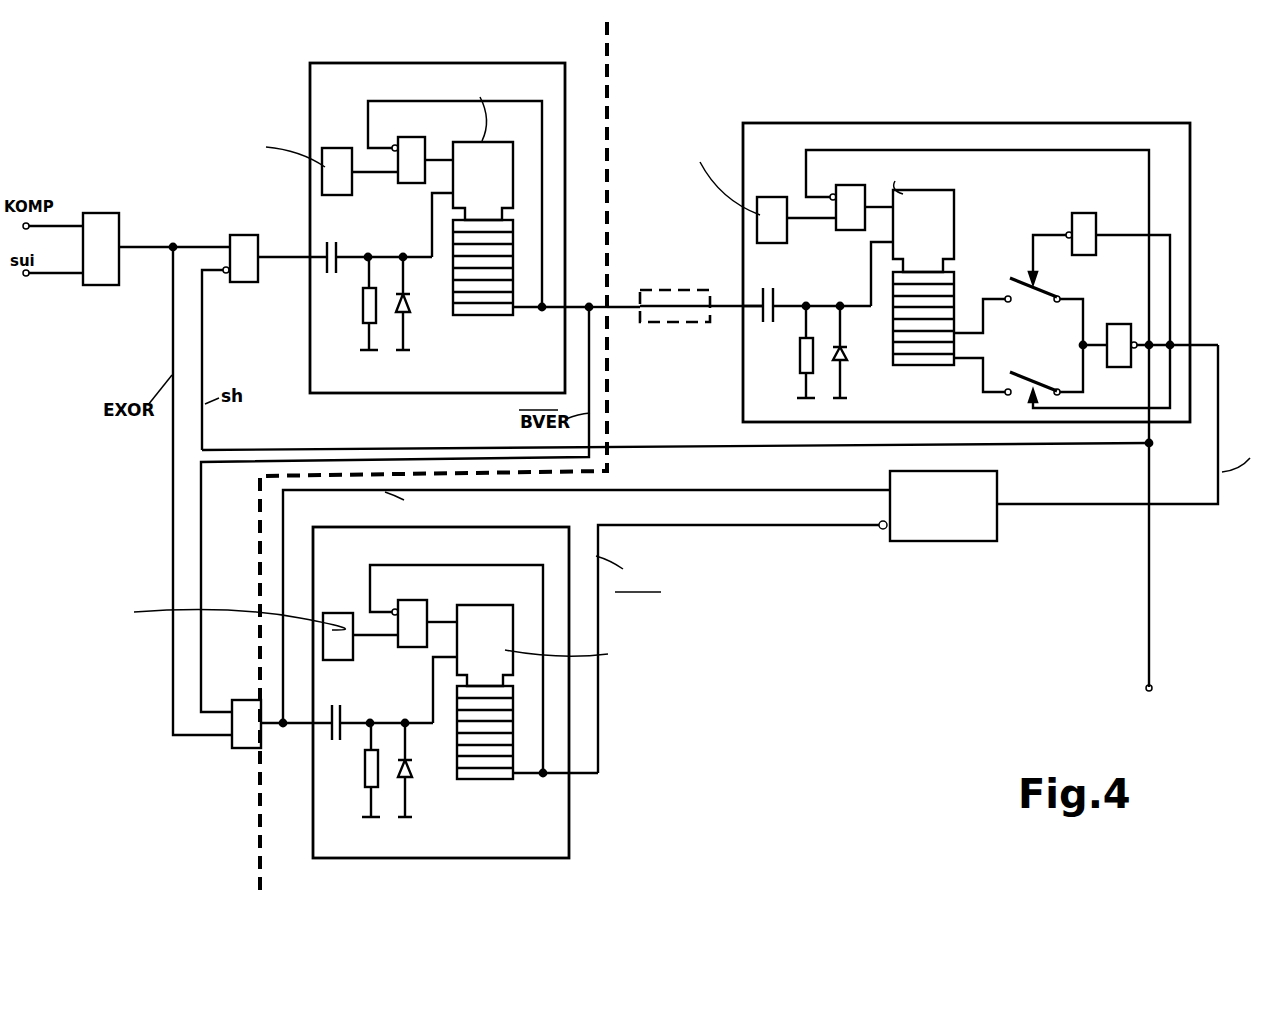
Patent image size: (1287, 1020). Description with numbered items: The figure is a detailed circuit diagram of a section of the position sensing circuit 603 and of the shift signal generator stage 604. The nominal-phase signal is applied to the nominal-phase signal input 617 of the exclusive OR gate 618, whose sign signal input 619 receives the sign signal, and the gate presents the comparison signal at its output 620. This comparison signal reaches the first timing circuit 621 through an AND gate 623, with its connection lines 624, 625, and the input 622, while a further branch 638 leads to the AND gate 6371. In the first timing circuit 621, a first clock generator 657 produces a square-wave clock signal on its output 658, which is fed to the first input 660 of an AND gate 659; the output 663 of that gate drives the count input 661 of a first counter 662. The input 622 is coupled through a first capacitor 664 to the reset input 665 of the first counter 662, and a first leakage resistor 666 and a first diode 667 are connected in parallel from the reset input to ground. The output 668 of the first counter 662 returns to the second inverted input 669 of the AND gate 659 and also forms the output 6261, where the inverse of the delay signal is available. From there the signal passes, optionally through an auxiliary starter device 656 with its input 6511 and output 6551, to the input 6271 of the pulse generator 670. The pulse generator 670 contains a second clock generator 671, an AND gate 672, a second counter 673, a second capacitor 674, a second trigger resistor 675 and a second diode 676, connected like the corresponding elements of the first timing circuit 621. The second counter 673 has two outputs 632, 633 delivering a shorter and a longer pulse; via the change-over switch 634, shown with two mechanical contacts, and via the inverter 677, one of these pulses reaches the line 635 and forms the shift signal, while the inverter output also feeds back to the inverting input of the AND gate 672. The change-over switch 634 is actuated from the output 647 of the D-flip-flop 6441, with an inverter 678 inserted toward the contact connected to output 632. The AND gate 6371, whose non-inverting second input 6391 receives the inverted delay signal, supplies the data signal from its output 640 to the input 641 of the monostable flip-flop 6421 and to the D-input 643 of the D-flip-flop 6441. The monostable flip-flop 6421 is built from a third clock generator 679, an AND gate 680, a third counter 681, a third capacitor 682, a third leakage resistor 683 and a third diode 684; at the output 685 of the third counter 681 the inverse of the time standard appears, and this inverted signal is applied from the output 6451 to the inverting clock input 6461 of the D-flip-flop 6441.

The position sensing circuit 603 is at (202, 93).
The shift signal generator stage 604 is at (956, 93).
The nominal-phase signal input 617 is at (45, 275).
The exclusive OR gate 618 is at (105, 212).
The sign signal input 619 is at (56, 222).
The output 620 is at (140, 244).
The first timing circuit 621 is at (411, 61).
The input 622 is at (285, 263).
The AND gate 623 is at (247, 233).
The AND gate input line 624 is at (198, 244).
The AND gate inverting input line 625 is at (203, 283).
The output 632 is at (980, 303).
The output 633 is at (977, 367).
The change-over switch 634 is at (1051, 345).
The line 635 is at (1010, 446).
The AND gate input line 638 is at (214, 738).
The output 640 is at (262, 742).
The input 641 is at (315, 731).
The D-input 643 is at (833, 488).
The output 647 is at (1026, 506).
The auxiliary starter device 656 is at (673, 288).
The first clock generator 657 is at (331, 150).
The output 658 is at (361, 176).
The AND gate 659 is at (403, 138).
The first input 660 is at (388, 175).
The count input 661 is at (450, 157).
The first counter 662 is at (515, 162).
The output 663 is at (436, 157).
The first capacitor 664 is at (334, 276).
The reset input 665 is at (430, 201).
The first leakage resistor 666 is at (362, 314).
The first diode 667 is at (408, 308).
The output 668 is at (530, 311).
The second inverted input 669 is at (369, 128).
The pulse generator 670 is at (1093, 121).
The second clock generator 671 is at (763, 196).
The AND gate 672 is at (850, 186).
The second counter 673 is at (957, 198).
The second capacitor 674 is at (765, 287).
The second trigger resistor 675 is at (800, 372).
The second diode 676 is at (848, 358).
The inverter 677 is at (1112, 323).
The inverter 678 is at (1100, 212).
The third clock generator 679 is at (338, 611).
The AND gate 680 is at (412, 599).
The third counter 681 is at (487, 604).
The third capacitor 682 is at (344, 714).
The third leakage resistor 683 is at (365, 781).
The third diode 684 is at (410, 776).
The output 685 is at (526, 781).
The output 6261 is at (578, 300).
The input 6271 is at (752, 310).
The AND gate 6371 is at (246, 750).
The second input 6391 is at (213, 706).
The monostable flip-flop 6421 is at (496, 861).
The D-flip-flop 6441 is at (953, 543).
The output 6451 is at (578, 777).
The clock input 6461 is at (811, 529).
The input 6511 is at (626, 299).
The output 6551 is at (726, 300).